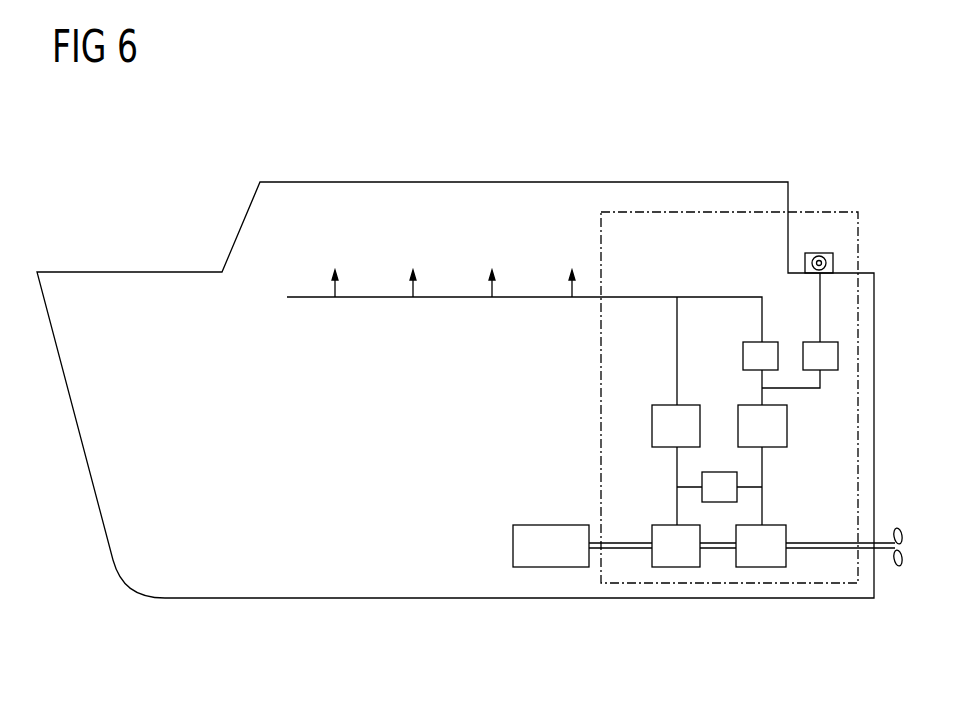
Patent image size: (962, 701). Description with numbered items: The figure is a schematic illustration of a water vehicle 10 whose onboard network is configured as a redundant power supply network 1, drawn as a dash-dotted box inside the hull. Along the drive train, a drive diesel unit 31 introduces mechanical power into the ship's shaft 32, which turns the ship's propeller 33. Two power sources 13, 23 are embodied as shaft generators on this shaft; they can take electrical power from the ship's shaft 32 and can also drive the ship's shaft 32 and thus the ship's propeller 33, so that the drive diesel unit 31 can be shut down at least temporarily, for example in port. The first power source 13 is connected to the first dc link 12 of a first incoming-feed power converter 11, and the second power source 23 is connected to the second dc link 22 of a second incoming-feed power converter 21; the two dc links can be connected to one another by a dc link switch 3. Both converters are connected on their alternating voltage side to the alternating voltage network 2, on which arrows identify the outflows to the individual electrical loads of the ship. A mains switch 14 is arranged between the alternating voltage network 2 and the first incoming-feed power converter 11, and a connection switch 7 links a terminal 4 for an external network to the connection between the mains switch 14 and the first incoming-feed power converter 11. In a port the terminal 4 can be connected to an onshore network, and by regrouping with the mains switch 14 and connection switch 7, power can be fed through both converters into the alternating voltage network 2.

The water vehicle 10 is at (176, 223).
The redundant power supply network 1 is at (829, 212).
The alternating voltage network 2 is at (640, 297).
The terminal 4 is at (838, 262).
The mains switch 14 is at (743, 355).
The connection switch 7 is at (838, 355).
The second incoming-feed power converter 21 is at (652, 418).
The second dc link 22 is at (677, 505).
The first incoming-feed power converter 11 is at (787, 422).
The first dc link 12 is at (762, 462).
The dc link switch 3 is at (718, 472).
The drive diesel unit 31 is at (513, 543).
The second power source 23 is at (677, 567).
The first power source 13 is at (761, 567).
The ship's shaft 32 is at (633, 553).
The ship's propeller 33 is at (898, 570).